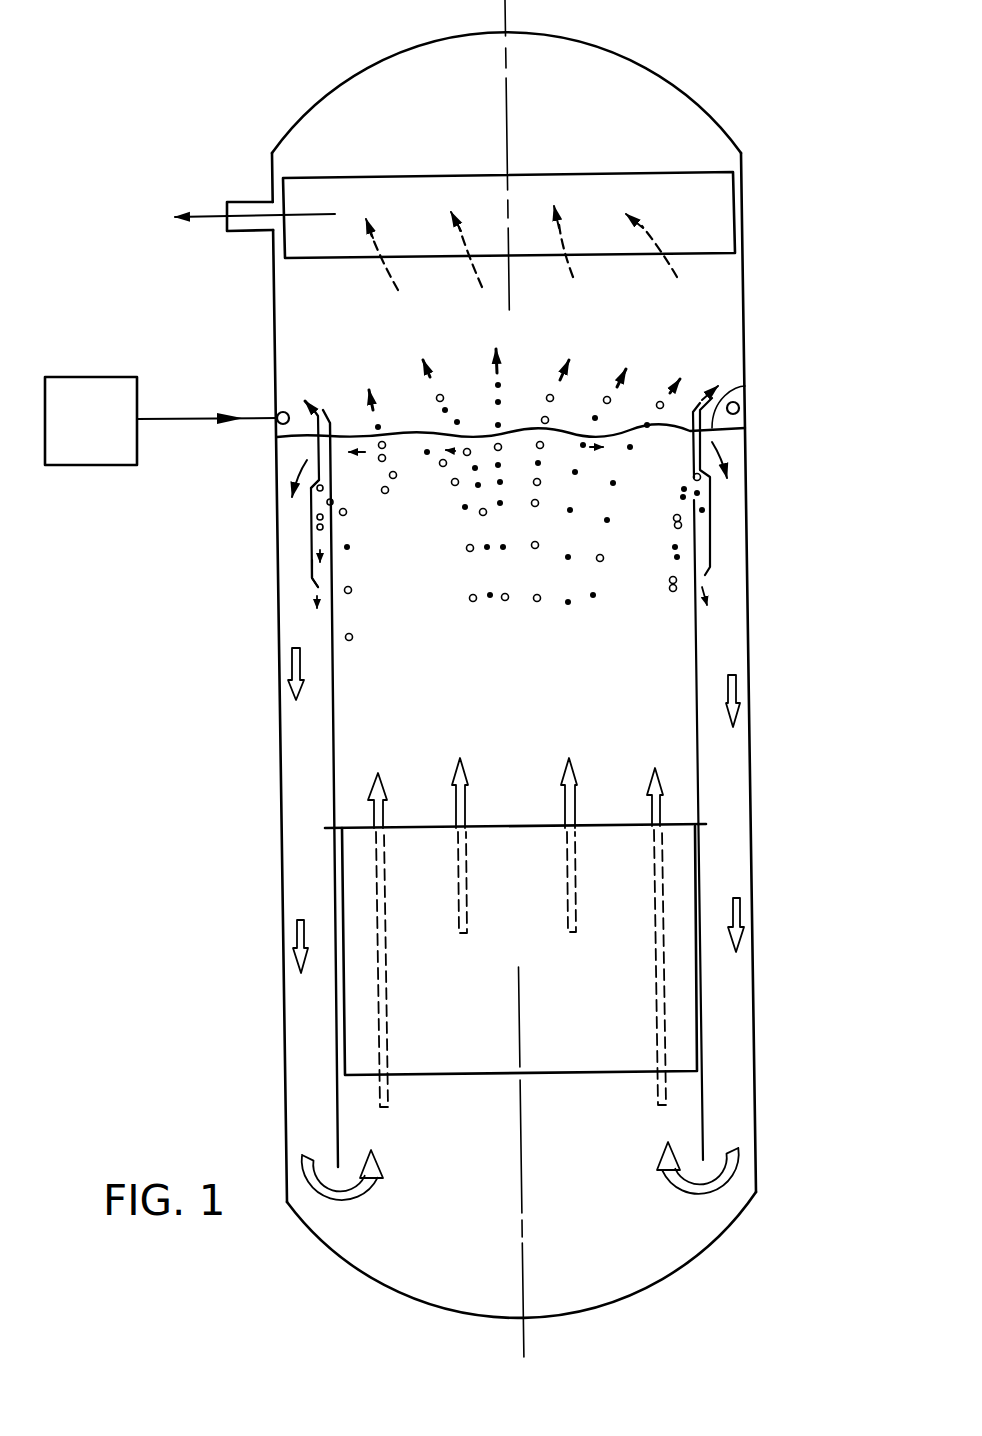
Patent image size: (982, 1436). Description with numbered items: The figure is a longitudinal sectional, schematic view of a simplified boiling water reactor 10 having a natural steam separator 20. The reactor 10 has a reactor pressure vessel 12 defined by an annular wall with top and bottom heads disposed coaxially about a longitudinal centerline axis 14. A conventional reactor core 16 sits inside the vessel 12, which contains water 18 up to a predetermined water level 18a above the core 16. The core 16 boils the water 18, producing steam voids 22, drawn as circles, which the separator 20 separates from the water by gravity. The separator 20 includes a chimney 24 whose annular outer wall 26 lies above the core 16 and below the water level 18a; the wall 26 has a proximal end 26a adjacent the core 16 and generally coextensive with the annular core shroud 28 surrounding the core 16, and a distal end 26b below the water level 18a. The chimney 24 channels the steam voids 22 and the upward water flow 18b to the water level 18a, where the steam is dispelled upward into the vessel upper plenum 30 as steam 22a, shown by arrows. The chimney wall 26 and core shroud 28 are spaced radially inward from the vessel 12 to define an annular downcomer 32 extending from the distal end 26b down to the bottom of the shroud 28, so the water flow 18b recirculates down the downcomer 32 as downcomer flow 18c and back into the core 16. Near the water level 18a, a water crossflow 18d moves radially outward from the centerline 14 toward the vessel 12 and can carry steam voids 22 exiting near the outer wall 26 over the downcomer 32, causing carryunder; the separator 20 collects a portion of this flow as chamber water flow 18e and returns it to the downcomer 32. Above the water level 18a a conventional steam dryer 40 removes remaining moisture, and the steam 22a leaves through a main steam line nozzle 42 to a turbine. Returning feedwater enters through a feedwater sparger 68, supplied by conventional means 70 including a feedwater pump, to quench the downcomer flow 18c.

The simplified boiling water reactor 10 is at (693, 98).
The reactor pressure vessel 12 is at (745, 313).
The longitudinal centerline axis 14 is at (506, 10).
The reactor core 16 is at (677, 878).
The water 18 is at (668, 674).
The water level 18a is at (745, 386).
The water flow 18b is at (467, 797).
The downcomer flow 18c is at (290, 661).
The water crossflow 18d is at (358, 437).
The chamber water flow 18e is at (320, 555).
The steam separator 20 is at (297, 550).
The steam voids 22 is at (468, 550).
The steam 22a is at (210, 213).
The chimney 24 is at (330, 707).
The chimney outer wall 26 is at (335, 668).
The proximal end 26a is at (333, 826).
The distal end 26b is at (331, 523).
The core shroud 28 is at (336, 1036).
The vessel upper plenum 30 is at (300, 331).
The annular downcomer 32 is at (303, 852).
The steam dryer 40 is at (716, 210).
The main steam line nozzle 42 is at (248, 233).
The feedwater sparger 68 is at (280, 411).
The feedwater supply means 70 is at (108, 433).